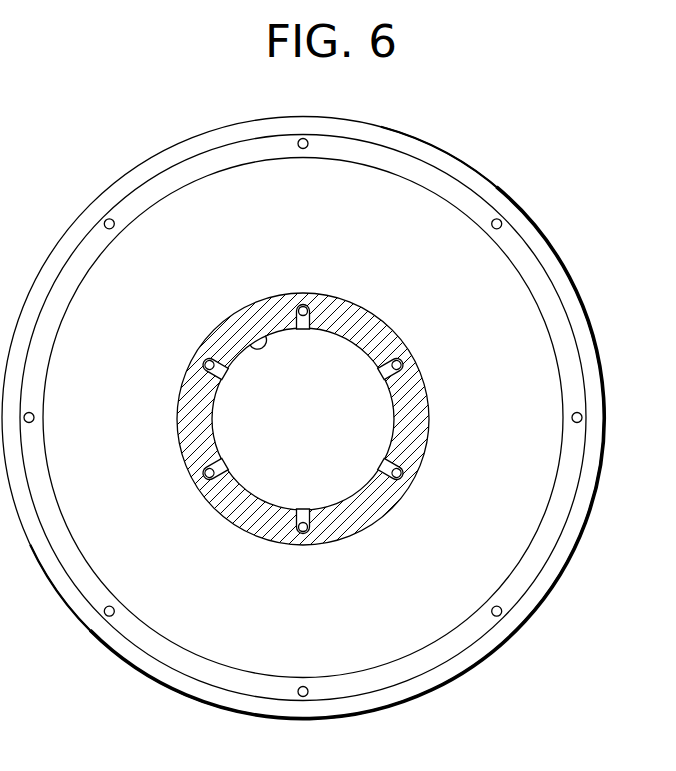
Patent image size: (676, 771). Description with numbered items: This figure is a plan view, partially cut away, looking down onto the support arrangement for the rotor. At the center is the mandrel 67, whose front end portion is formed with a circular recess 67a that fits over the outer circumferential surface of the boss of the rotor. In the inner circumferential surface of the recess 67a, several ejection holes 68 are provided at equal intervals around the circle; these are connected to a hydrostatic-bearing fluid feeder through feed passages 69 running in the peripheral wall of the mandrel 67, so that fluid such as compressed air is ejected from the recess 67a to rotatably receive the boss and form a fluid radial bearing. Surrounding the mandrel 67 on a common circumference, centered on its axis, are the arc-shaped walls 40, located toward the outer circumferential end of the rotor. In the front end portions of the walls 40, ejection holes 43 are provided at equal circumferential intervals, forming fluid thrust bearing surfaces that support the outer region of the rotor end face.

The arc-shaped wall 40 is at (580, 283).
The ejection hole 43 is at (500, 222).
The mandrel 67 is at (275, 296).
The circular recess 67a is at (250, 338).
The ejection hole 68 is at (222, 371).
The feed passage 69 is at (204, 362).